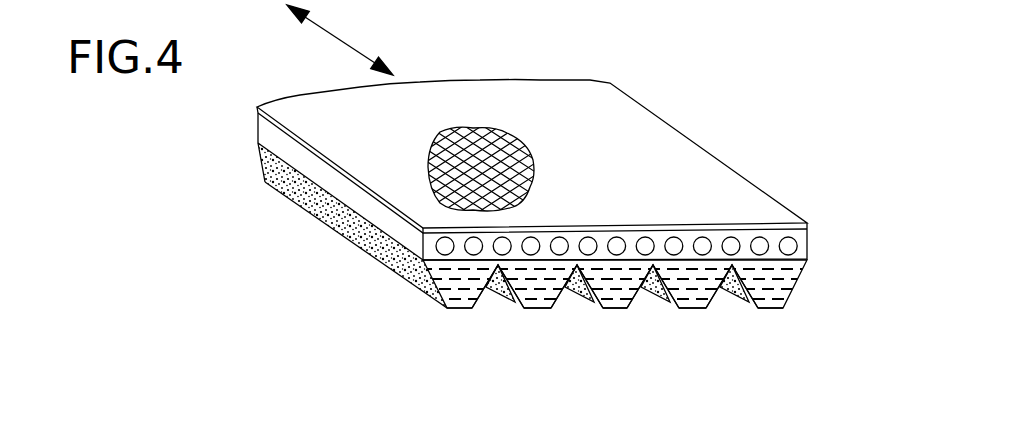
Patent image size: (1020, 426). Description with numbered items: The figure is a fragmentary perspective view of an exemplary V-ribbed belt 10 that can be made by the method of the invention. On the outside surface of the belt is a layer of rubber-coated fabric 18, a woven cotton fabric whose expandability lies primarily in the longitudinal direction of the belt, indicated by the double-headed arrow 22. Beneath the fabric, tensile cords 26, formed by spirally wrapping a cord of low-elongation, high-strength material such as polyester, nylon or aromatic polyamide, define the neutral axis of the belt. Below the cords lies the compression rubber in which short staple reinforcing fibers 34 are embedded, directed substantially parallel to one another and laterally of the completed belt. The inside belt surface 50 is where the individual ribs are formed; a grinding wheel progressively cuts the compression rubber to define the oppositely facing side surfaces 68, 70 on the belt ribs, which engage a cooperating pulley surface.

The V-ribbed belt 10 is at (719, 136).
The layer of rubber-coated fabric 18 is at (605, 130).
The double-headed arrow 22 is at (337, 33).
The tensile cords 26 is at (762, 237).
The short staple reinforcing fibers 34 is at (441, 290).
The inside belt surface 50 is at (467, 308).
The side surface 68 is at (500, 297).
The side surface 70 is at (567, 300).